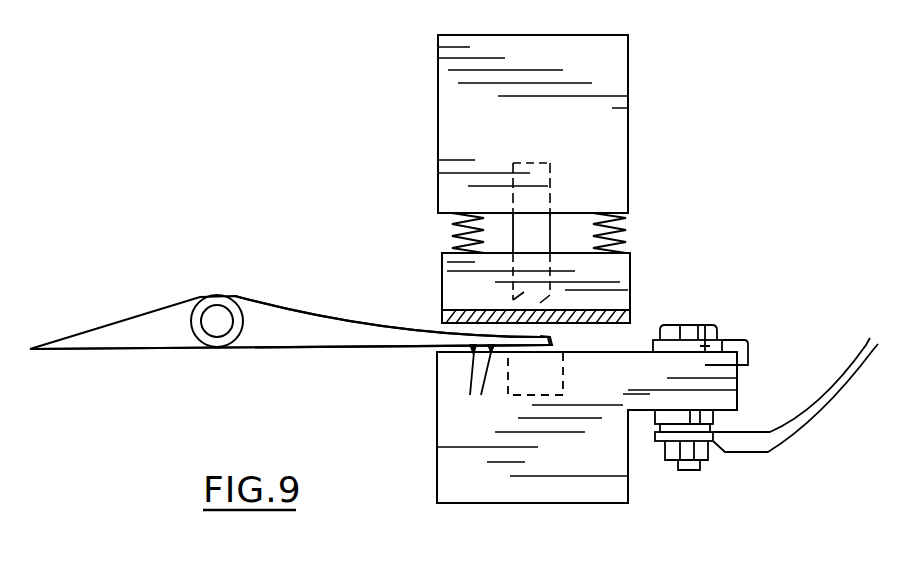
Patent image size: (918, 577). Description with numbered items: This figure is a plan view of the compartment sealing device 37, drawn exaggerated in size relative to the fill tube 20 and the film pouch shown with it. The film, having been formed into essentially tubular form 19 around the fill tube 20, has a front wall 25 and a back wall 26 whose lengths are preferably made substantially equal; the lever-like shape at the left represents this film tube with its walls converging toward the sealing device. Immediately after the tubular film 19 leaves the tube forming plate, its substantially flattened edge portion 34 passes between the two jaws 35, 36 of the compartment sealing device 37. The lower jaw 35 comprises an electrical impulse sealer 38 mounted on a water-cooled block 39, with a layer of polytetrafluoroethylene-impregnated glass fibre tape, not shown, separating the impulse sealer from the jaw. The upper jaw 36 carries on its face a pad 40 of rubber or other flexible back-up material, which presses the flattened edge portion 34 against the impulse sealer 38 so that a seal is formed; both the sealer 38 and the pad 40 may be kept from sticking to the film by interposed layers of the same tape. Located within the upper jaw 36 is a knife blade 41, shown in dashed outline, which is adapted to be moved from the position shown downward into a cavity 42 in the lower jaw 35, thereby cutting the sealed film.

The tubular film 19 is at (148, 356).
The fill tube 20 is at (254, 300).
The front wall 25 is at (368, 322).
The back wall 26 is at (382, 350).
The flattened edge portion 34 is at (553, 341).
The jaw 35 is at (436, 468).
The jaw 36 is at (442, 272).
The compartment sealing device 37 is at (636, 152).
The electrical impulse sealer 38 is at (477, 386).
The water-cooled block 39 is at (440, 370).
The flexible back-up material pad 40 is at (442, 318).
The knife blade 41 is at (538, 222).
The cavity 42 is at (546, 380).